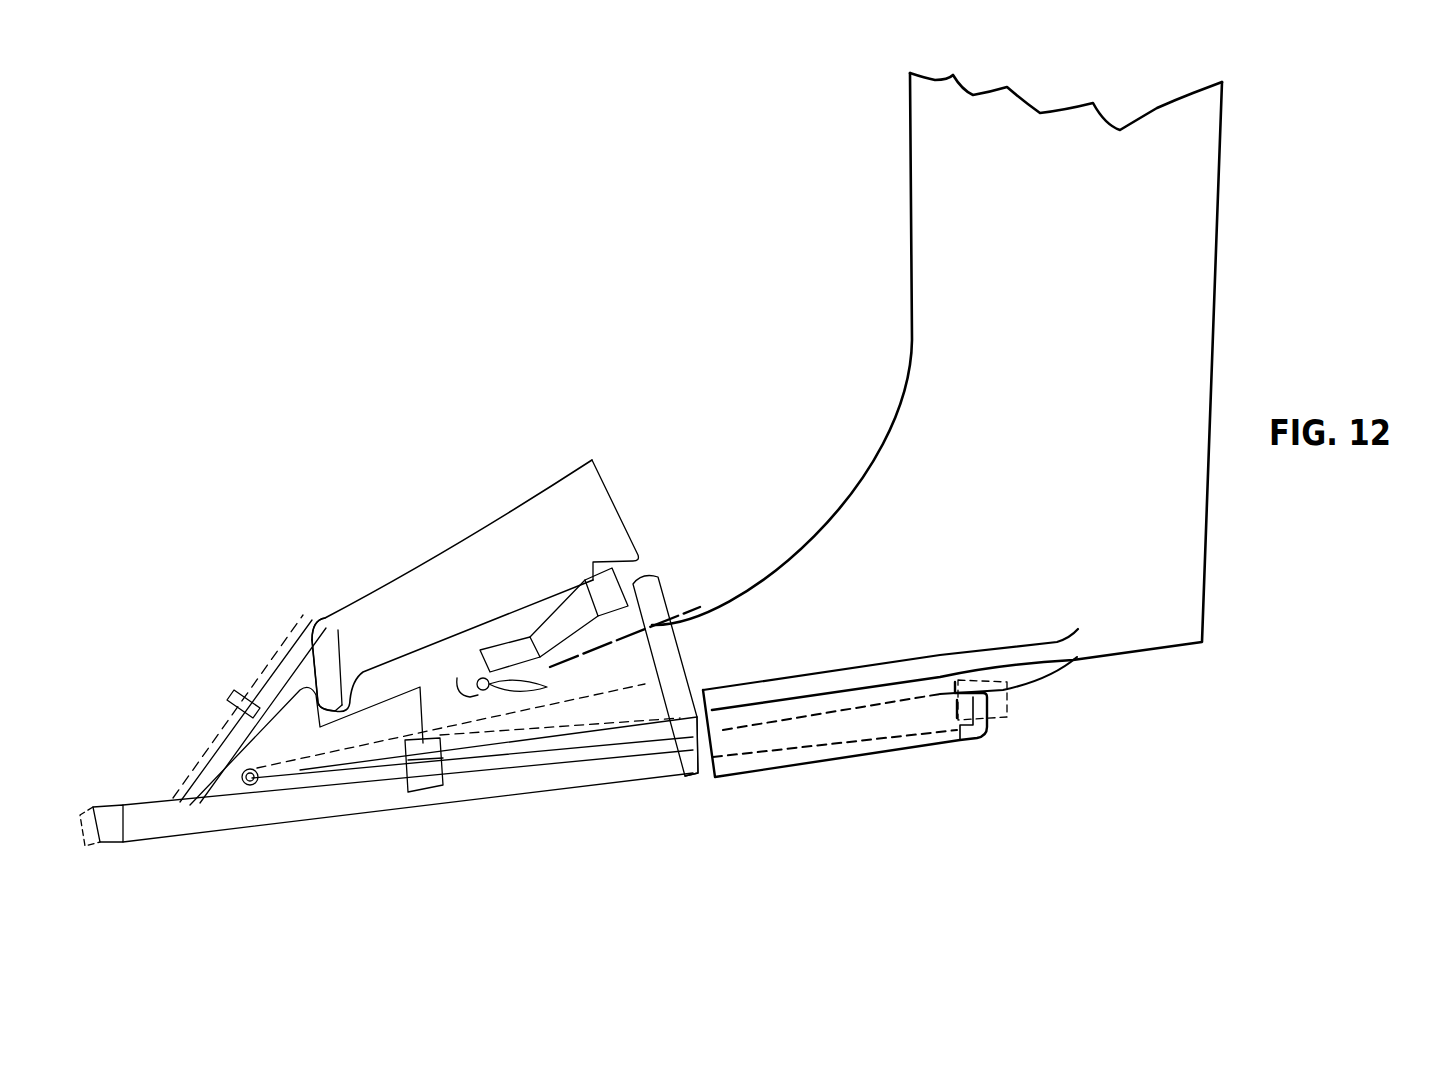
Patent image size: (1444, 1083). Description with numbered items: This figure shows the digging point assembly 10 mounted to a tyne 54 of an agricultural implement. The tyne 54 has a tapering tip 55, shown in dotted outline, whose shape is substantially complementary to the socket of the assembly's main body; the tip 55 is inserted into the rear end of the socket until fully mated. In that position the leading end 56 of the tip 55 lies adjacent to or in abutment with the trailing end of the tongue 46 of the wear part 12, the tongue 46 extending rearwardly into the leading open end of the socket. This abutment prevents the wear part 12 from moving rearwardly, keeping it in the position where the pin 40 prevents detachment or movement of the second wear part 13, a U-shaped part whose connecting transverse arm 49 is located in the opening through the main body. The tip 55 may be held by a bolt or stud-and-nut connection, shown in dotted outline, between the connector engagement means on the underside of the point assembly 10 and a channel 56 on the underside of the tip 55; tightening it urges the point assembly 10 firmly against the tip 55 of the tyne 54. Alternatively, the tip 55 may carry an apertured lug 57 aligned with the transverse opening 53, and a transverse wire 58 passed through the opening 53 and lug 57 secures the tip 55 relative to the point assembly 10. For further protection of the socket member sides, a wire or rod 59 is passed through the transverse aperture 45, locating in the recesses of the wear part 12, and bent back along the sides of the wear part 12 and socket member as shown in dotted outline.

The digging point assembly 10 is at (475, 555).
The wear part 12 is at (265, 698).
The second wear part 13 is at (423, 648).
The pin 40 is at (318, 615).
The transverse aperture 45 is at (252, 790).
The tongue 46 is at (423, 755).
The transverse arm 49 is at (340, 675).
The transverse opening 53 is at (487, 675).
The tyne 54 is at (880, 242).
The tapering tip 55 is at (708, 596).
The leading end 56 is at (880, 747).
The apertured lug 57 is at (480, 678).
The transverse wire 58 is at (490, 692).
The wire or rod 59 is at (352, 758).